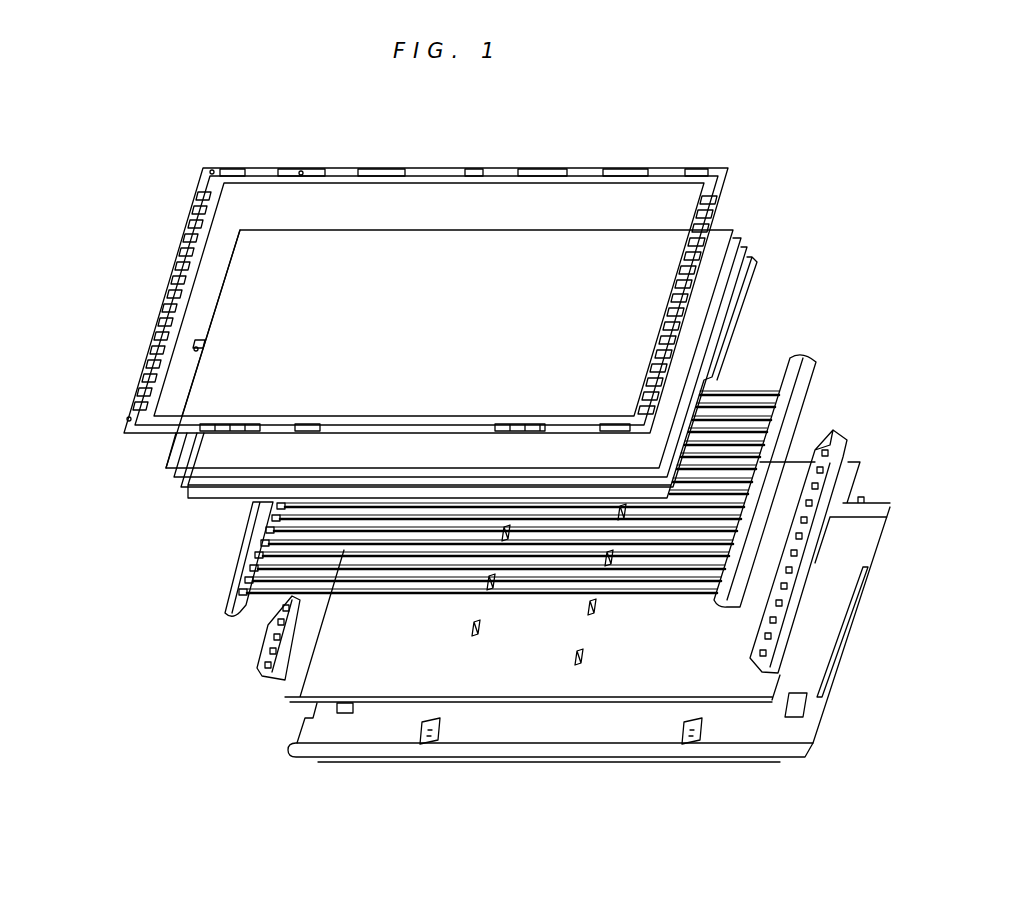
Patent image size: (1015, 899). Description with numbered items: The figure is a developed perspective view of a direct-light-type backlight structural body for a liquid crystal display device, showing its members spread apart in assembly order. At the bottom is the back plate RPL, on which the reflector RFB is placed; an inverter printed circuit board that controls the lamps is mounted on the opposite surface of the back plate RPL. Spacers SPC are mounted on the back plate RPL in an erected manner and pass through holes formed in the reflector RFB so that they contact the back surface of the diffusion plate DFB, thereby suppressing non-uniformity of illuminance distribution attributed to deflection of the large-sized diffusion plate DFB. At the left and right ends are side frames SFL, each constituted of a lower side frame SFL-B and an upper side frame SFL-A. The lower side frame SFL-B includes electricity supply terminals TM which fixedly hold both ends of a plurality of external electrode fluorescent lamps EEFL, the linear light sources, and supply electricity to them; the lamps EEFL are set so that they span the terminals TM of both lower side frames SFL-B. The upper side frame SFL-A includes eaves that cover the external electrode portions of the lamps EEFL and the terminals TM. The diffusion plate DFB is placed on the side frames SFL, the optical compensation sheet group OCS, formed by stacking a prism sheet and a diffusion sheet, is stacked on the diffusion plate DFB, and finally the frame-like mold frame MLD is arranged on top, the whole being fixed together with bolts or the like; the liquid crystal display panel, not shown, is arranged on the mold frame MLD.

The mold frame MLD is at (593, 168).
The optical compensation sheet group OCS is at (752, 240).
The diffusion plate DFB is at (745, 283).
The external electrode fluorescent lamps EEFL is at (740, 392).
The upper side frame SFL-A is at (807, 360).
The lower side frame SFL-B is at (840, 428).
The side frame SFL is at (926, 306).
The electricity supply terminals TM is at (787, 587).
The reflector RFB is at (475, 683).
The back plate RPL is at (582, 765).
The spacers SPC is at (583, 660).